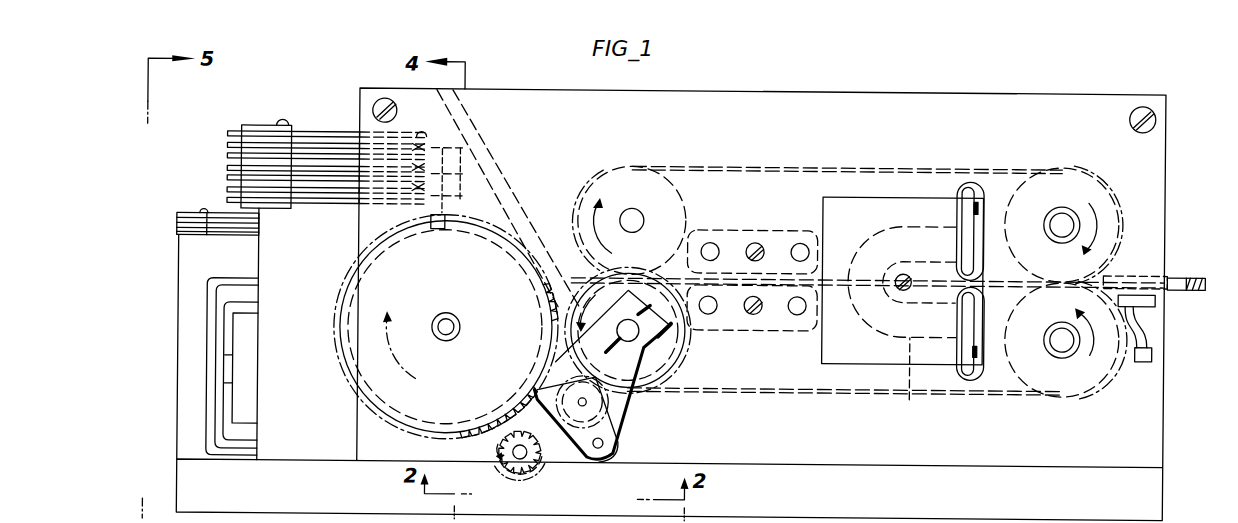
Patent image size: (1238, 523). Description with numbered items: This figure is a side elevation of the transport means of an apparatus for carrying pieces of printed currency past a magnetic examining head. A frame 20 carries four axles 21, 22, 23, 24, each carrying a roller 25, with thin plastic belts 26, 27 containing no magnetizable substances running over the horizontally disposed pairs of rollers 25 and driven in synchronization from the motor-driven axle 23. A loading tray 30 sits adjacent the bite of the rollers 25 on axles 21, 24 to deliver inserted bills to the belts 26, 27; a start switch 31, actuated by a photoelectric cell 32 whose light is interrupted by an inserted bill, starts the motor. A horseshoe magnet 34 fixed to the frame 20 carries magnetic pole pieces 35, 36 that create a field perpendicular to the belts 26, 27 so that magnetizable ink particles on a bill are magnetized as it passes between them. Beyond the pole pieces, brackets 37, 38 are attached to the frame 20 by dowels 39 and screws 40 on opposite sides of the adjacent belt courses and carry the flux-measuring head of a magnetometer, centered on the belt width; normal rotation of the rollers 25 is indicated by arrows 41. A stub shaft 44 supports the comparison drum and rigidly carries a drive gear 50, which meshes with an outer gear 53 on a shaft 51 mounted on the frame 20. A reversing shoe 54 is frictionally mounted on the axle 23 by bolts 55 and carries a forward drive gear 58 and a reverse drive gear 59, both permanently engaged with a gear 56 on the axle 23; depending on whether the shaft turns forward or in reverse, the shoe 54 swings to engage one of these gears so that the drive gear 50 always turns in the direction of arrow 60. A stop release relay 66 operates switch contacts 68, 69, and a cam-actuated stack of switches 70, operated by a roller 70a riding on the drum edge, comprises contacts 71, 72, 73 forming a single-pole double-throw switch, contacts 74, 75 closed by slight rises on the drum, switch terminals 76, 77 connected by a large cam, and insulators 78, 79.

The frame 20 is at (944, 101).
The axle 21 is at (1063, 205).
The axle 22 is at (631, 212).
The axle 23 is at (618, 322).
The axle 24 is at (1060, 336).
The roller 25 is at (602, 168).
The belt 26 is at (826, 389).
The belt 27 is at (802, 165).
The loading tray 30 is at (1174, 269).
The start switch 31 is at (1152, 355).
The photoelectric cell 32 is at (1149, 301).
The horseshoe magnet 34 is at (912, 395).
The magnetic pole piece 35 is at (970, 330).
The magnetic pole piece 36 is at (969, 218).
The bracket 37 is at (737, 327).
The bracket 38 is at (743, 227).
The dowel 39 is at (710, 240).
The screw 40 is at (757, 243).
The arrow 41 is at (577, 207).
The stub shaft 44 is at (455, 323).
The drive gear 50 is at (337, 300).
The shaft 51 is at (517, 452).
The outer gear 53 is at (502, 483).
The reversing shoe 54 is at (606, 410).
The bolt 55 is at (652, 338).
The gear 56 is at (665, 387).
The forward drive gear 58 is at (562, 463).
The reverse drive gear 59 is at (625, 431).
The arrow 60 is at (408, 372).
The stop release relay 66 is at (244, 407).
The switch contacts 68 is at (178, 222).
The switch contacts 69 is at (178, 238).
The stack of switches 70 is at (248, 116).
The roller 70a is at (438, 232).
The contact 71 is at (228, 201).
The contact 72 is at (228, 191).
The contact 73 is at (228, 179).
The contact 74 is at (228, 169).
The contact 75 is at (228, 157).
The switch terminal 76 is at (228, 146).
The switch terminal 77 is at (228, 134).
The insulator 78 is at (472, 158).
The insulator 79 is at (468, 193).